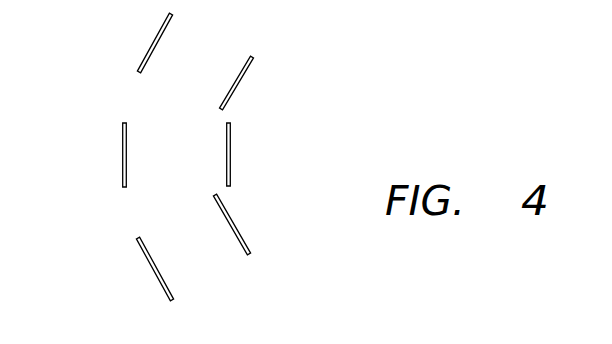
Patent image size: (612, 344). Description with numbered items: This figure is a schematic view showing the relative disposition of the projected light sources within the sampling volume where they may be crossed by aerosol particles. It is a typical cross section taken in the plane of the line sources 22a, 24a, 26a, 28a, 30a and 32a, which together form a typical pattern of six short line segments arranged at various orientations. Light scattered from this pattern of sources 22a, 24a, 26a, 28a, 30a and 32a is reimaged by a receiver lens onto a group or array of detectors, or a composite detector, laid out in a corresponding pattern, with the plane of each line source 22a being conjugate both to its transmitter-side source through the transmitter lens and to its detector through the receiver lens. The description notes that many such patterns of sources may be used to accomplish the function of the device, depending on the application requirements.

The projected light source 22a is at (122, 142).
The projected light source 24a is at (246, 75).
The projected light source 26a is at (238, 224).
The projected light source 28a is at (230, 144).
The projected light source 30a is at (150, 47).
The projected light source 32a is at (159, 283).